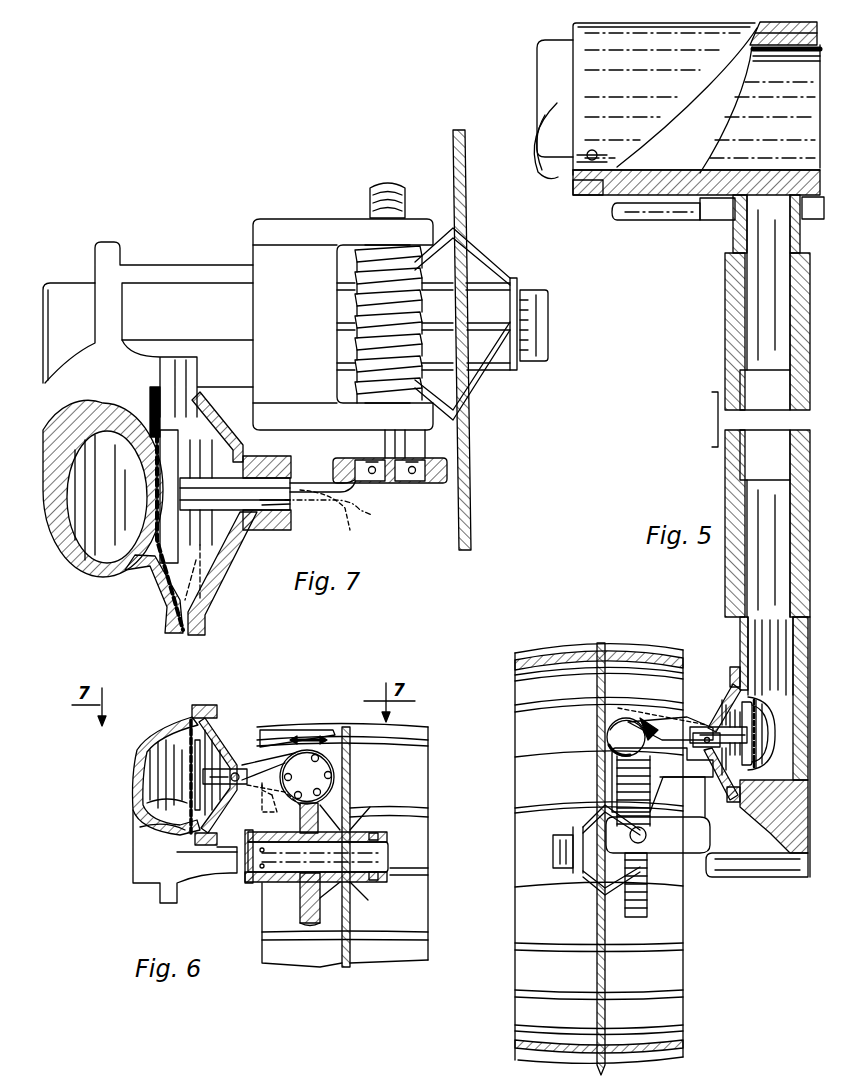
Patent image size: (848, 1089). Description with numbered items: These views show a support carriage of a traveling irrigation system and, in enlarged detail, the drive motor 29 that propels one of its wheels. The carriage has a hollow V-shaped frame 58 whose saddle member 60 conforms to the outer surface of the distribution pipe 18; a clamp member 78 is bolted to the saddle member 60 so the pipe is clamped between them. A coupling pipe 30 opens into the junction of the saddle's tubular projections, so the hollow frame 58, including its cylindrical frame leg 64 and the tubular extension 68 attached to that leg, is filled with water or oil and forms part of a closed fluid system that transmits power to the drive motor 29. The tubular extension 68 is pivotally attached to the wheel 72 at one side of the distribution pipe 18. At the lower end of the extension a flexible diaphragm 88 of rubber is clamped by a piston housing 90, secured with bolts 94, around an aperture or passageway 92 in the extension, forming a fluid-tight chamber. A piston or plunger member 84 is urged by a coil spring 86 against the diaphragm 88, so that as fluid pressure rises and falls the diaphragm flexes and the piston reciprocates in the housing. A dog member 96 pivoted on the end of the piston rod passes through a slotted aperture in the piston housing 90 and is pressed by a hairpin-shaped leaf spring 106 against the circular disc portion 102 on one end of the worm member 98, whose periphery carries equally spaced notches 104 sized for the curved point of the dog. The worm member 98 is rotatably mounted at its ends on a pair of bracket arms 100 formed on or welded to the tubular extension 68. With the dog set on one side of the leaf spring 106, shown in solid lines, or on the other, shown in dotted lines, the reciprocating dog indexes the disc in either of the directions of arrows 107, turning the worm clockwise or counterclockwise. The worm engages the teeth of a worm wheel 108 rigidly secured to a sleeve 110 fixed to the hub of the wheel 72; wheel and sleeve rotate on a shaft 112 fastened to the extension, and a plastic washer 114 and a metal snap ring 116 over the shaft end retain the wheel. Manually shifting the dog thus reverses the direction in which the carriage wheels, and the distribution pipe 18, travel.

In FIG. 5, the distribution pipe 18 is at (790, 46).
In FIG. 7, the drive motor 29 is at (207, 234).
In FIG. 5, the drive motor 29 is at (689, 648).
In FIG. 6, the drive motor 29 is at (265, 692).
In FIG. 5, the coupling pipe 30 is at (681, 206).
In FIG. 5, the V-shaped frame 58 is at (724, 470).
In FIG. 5, the saddle member 60 is at (616, 192).
In FIG. 5, the frame leg 64 is at (726, 330).
In FIG. 7, the tubular extension 68 is at (87, 577).
In FIG. 5, the tubular extension 68 is at (739, 631).
In FIG. 6, the tubular extension 68 is at (133, 776).
In FIG. 7, the wheel 72 is at (472, 502).
In FIG. 5, the wheel 72 is at (584, 648).
In FIG. 6, the wheel 72 is at (361, 846).
In FIG. 5, the clamp member 78 is at (702, 33).
In FIG. 7, the piston or plunger member 84 is at (240, 438).
In FIG. 5, the piston or plunger member 84 is at (712, 724).
In FIG. 6, the piston or plunger member 84 is at (235, 766).
In FIG. 7, the coil spring 86 is at (217, 577).
In FIG. 5, the coil spring 86 is at (728, 778).
In FIG. 7, the flexible diaphragm 88 is at (155, 506).
In FIG. 5, the flexible diaphragm 88 is at (766, 718).
In FIG. 6, the flexible diaphragm 88 is at (188, 775).
In FIG. 7, the piston housing 90 is at (230, 560).
In FIG. 5, the piston housing 90 is at (725, 696).
In FIG. 6, the piston housing 90 is at (217, 730).
In FIG. 5, the aperture or passageway 92 is at (766, 745).
In FIG. 6, the bolts 94 is at (218, 706).
In FIG. 7, the dog member 96 is at (325, 480).
In FIG. 5, the dog member 96 is at (678, 715).
In FIG. 6, the dog member 96 is at (270, 760).
In FIG. 7, the worm member 98 is at (354, 316).
In FIG. 5, the worm member 98 is at (616, 788).
In FIG. 7, the bracket arms 100 is at (331, 232).
In FIG. 5, the bracket arms 100 is at (612, 762).
In FIG. 7, the circular disc portion 102 is at (442, 485).
In FIG. 5, the circular disc portion 102 is at (607, 733).
In FIG. 6, the circular disc portion 102 is at (322, 750).
In FIG. 7, the notches 104 is at (370, 460).
In FIG. 6, the notches 104 is at (308, 777).
In FIG. 7, the leaf spring 106 is at (295, 510).
In FIG. 6, the leaf spring 106 is at (262, 786).
In FIG. 6, the arrows 107 is at (305, 735).
In FIG. 7, the worm wheel 108 is at (389, 186).
In FIG. 5, the worm wheel 108 is at (648, 898).
In FIG. 6, the worm wheel 108 is at (302, 893).
In FIG. 6, the sleeve 110 is at (376, 834).
In FIG. 6, the shaft 112 is at (378, 858).
In FIG. 7, the plastic washer 114 is at (513, 276).
In FIG. 5, the plastic washer 114 is at (596, 850).
In FIG. 6, the plastic washer 114 is at (369, 893).
In FIG. 7, the metal snap ring 116 is at (521, 288).
In FIG. 6, the metal snap ring 116 is at (378, 881).